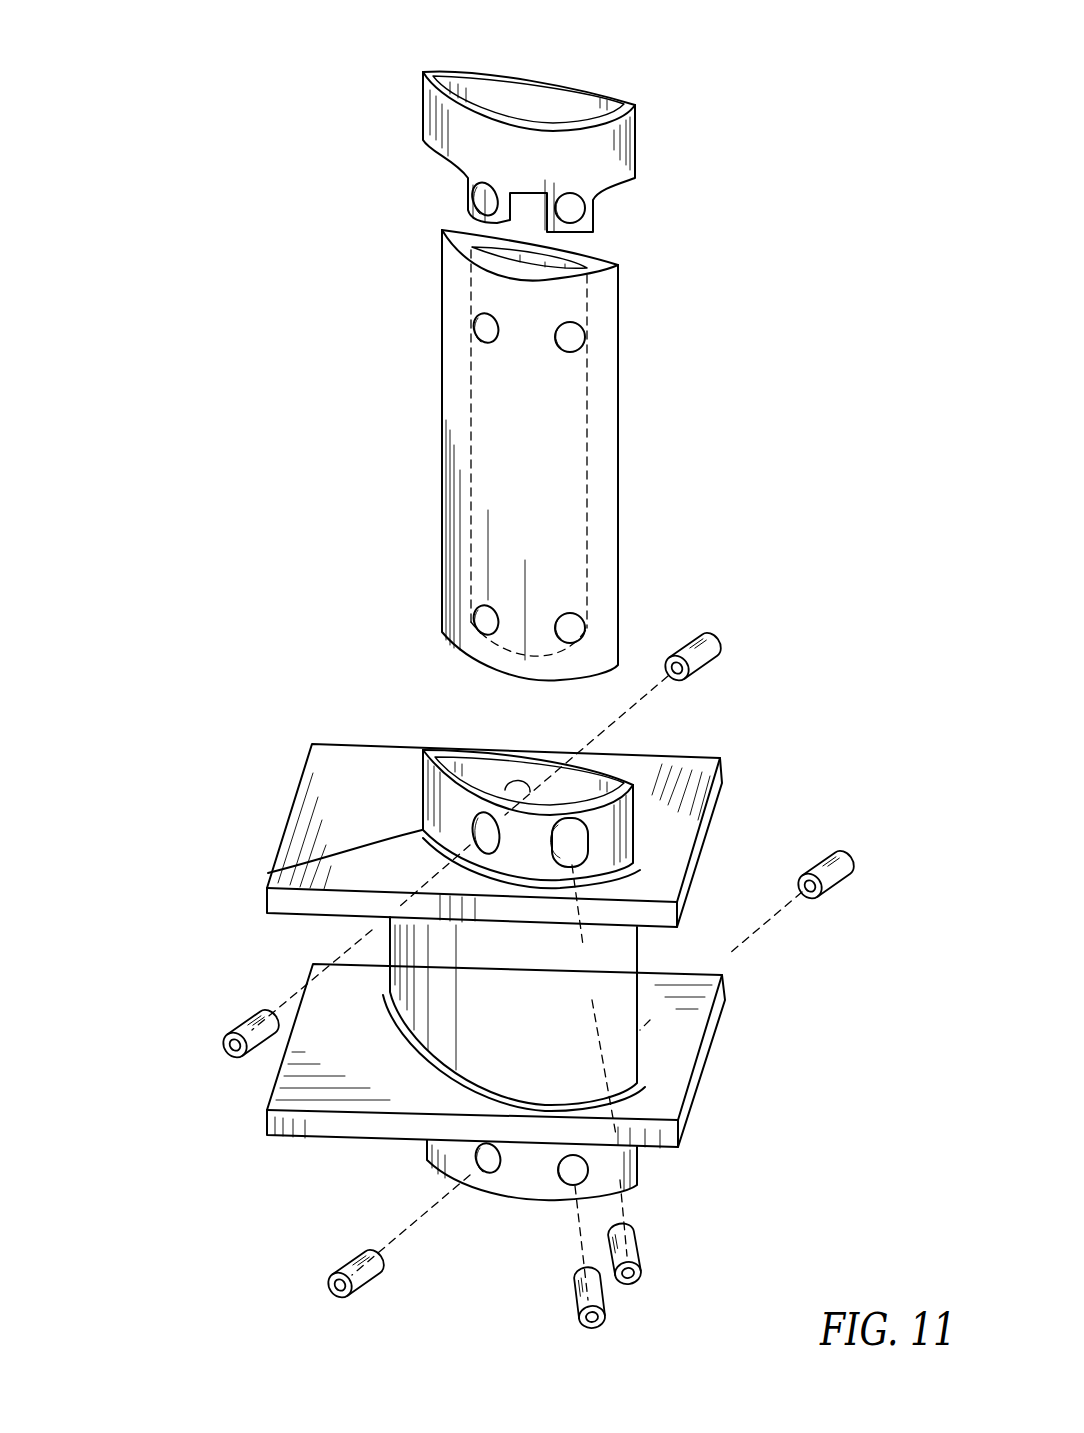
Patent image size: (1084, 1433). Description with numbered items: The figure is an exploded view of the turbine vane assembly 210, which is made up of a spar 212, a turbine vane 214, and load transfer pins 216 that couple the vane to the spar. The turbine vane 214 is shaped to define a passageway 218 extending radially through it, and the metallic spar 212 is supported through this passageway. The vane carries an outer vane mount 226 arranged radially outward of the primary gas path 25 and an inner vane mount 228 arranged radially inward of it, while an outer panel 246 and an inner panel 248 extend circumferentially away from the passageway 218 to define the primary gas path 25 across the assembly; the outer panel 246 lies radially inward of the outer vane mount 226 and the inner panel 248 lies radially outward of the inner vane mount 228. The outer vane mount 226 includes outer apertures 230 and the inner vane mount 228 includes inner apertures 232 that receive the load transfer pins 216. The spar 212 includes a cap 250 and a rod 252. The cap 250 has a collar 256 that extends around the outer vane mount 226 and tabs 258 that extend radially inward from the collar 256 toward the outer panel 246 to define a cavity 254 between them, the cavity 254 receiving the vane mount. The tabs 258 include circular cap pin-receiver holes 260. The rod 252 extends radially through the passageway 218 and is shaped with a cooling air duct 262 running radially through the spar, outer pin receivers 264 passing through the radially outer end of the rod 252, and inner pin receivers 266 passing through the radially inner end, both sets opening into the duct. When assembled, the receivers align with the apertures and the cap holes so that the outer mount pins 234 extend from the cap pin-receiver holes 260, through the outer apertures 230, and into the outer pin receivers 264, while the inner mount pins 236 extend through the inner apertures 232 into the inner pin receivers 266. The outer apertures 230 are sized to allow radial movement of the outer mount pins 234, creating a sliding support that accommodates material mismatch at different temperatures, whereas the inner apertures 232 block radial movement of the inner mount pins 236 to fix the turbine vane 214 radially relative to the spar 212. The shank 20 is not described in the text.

The turbine vane assembly 210 is at (135, 100).
The spar 212 is at (345, 160).
The turbine vane 214 is at (795, 820).
The load transfer pins 216 is at (300, 1245).
The passageway 218 is at (491, 786).
The shank 20 is at (652, 947).
The primary gas path 25 is at (184, 950).
The outer vane mount 226 is at (628, 778).
The inner vane mount 228 is at (435, 1204).
The outer apertures 230 is at (462, 833).
The inner apertures 232 is at (553, 1186).
The outer mount pins 234 is at (706, 636).
The inner mount pins 236 is at (824, 882).
The outer panel 246 is at (320, 742).
The inner panel 248 is at (265, 1132).
The cap 250 is at (550, 156).
The rod 252 is at (585, 449).
The cavity 254 is at (567, 106).
The collar 256 is at (640, 126).
The tabs 258 is at (470, 196).
The cap pin-receiver holes 260 is at (463, 208).
The cooling air duct 262 is at (540, 262).
The outer pin receivers 264 is at (473, 323).
The inner pin receivers 266 is at (473, 612).